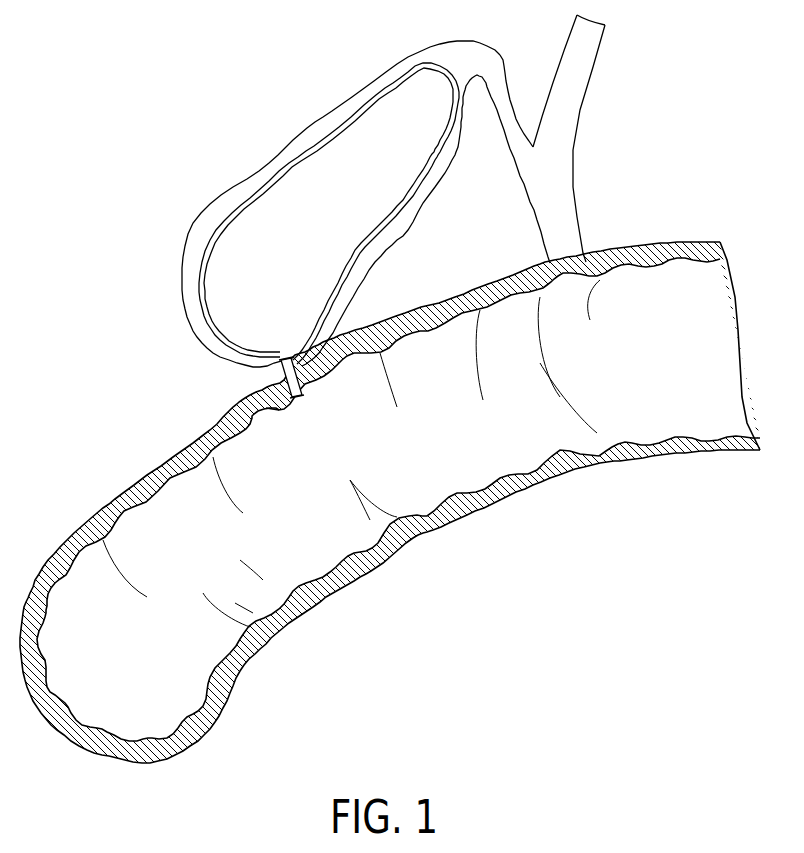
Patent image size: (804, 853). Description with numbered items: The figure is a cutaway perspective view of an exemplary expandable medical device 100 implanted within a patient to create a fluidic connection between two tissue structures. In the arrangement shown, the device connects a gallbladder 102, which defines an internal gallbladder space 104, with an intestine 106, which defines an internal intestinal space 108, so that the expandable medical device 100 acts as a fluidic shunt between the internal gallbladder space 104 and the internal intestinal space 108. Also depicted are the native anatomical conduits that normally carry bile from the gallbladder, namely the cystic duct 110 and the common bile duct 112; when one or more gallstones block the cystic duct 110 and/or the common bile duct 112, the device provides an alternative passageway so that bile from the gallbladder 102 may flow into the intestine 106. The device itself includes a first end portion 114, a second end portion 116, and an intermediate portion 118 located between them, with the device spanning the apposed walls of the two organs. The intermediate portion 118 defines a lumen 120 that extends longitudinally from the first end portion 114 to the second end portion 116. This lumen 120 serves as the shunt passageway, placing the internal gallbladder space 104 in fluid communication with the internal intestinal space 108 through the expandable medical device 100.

The expandable medical device 100 is at (258, 347).
The gallbladder 102 is at (226, 192).
The internal gallbladder space 104 is at (312, 240).
The intestine 106 is at (128, 493).
The internal intestinal space 108 is at (397, 448).
The cystic duct 110 is at (512, 97).
The common bile duct 112 is at (580, 217).
The first end portion 114 is at (240, 352).
The second end portion 116 is at (265, 402).
The intermediate portion 118 is at (276, 366).
The lumen 120 is at (299, 412).